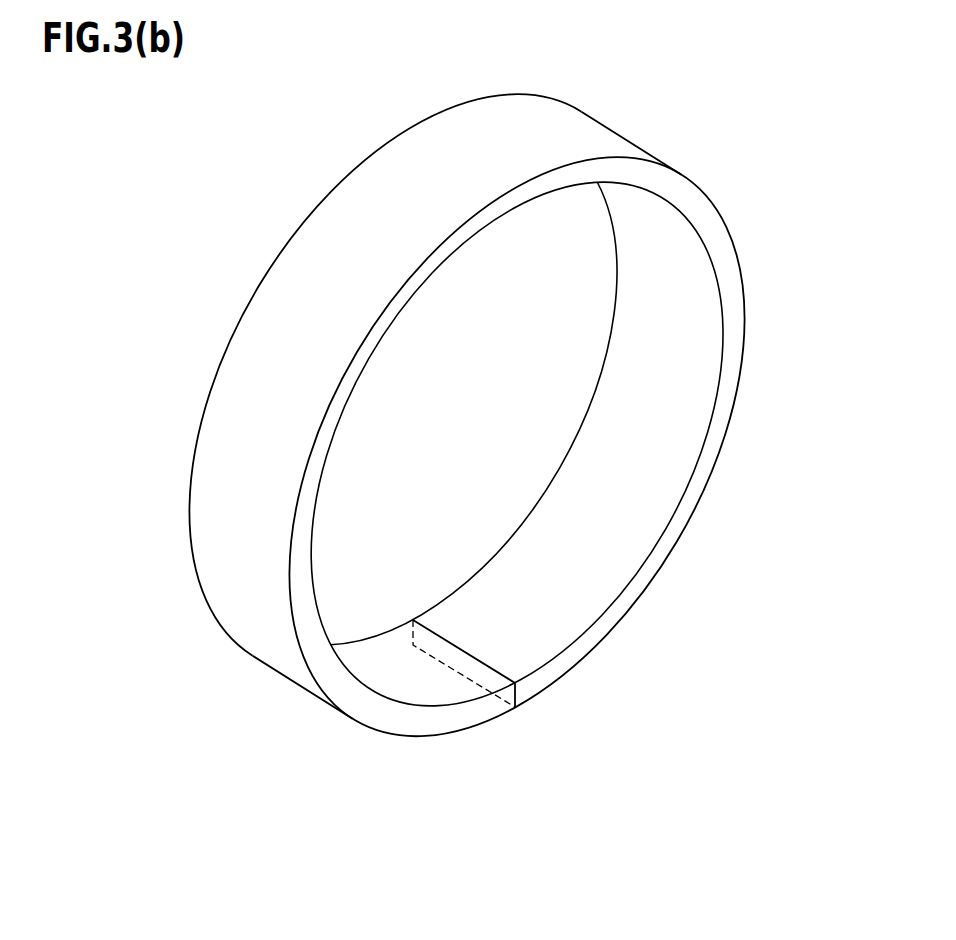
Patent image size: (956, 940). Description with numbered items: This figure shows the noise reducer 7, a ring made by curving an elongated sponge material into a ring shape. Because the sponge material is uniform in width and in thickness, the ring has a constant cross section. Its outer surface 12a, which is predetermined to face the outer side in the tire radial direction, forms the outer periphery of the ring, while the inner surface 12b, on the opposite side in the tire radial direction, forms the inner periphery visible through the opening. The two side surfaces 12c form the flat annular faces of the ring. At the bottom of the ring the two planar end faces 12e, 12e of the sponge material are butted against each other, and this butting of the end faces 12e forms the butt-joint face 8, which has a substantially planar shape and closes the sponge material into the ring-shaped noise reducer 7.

The noise reducer 7 is at (667, 117).
The outer surface 12a is at (385, 200).
The inner surface 12b is at (625, 462).
The side surfaces 12c is at (221, 362).
The end faces 12e is at (517, 688).
The butt-joint face 8 is at (458, 660).